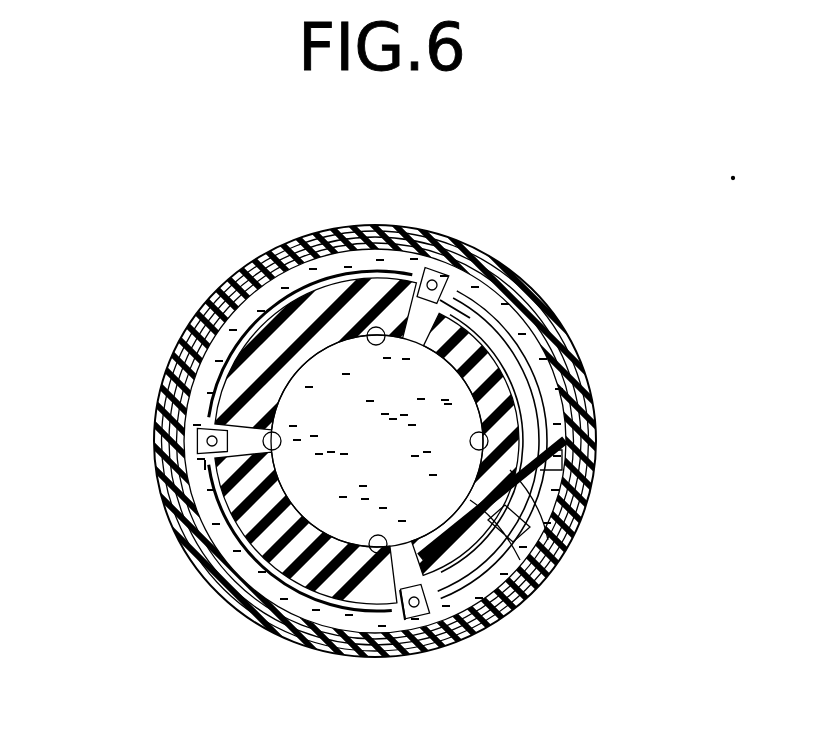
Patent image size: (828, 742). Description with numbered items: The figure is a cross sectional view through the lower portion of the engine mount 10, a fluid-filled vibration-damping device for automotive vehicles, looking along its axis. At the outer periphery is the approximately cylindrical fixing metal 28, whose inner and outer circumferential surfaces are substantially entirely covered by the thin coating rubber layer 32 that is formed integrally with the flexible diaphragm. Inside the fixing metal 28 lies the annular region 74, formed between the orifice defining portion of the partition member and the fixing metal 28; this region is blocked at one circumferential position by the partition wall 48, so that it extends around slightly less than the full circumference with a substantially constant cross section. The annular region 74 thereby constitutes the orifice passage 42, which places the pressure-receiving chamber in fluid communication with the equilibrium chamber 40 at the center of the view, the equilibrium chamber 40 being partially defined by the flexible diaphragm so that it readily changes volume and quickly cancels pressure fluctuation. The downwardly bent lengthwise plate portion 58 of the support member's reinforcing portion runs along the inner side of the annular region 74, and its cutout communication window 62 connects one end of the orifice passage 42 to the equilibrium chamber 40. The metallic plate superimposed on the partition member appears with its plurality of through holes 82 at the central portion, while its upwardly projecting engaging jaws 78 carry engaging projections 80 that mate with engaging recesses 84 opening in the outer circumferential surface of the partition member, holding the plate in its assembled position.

The engine mount 10 is at (600, 343).
The fixing metal 28 is at (493, 272).
The coating rubber layer 32 is at (468, 245).
The equilibrium chamber 40 is at (390, 454).
The orifice passage 42 is at (205, 330).
The annular region 74 is at (370, 439).
The partition wall 48 is at (553, 437).
The lengthwise plate portion 58 is at (520, 383).
The communication window 62 is at (593, 490).
The engaging jaw 78 is at (427, 293).
The engaging projection 80 is at (441, 298).
The through hole 82 is at (383, 293).
The engaging recess 84 is at (480, 313).